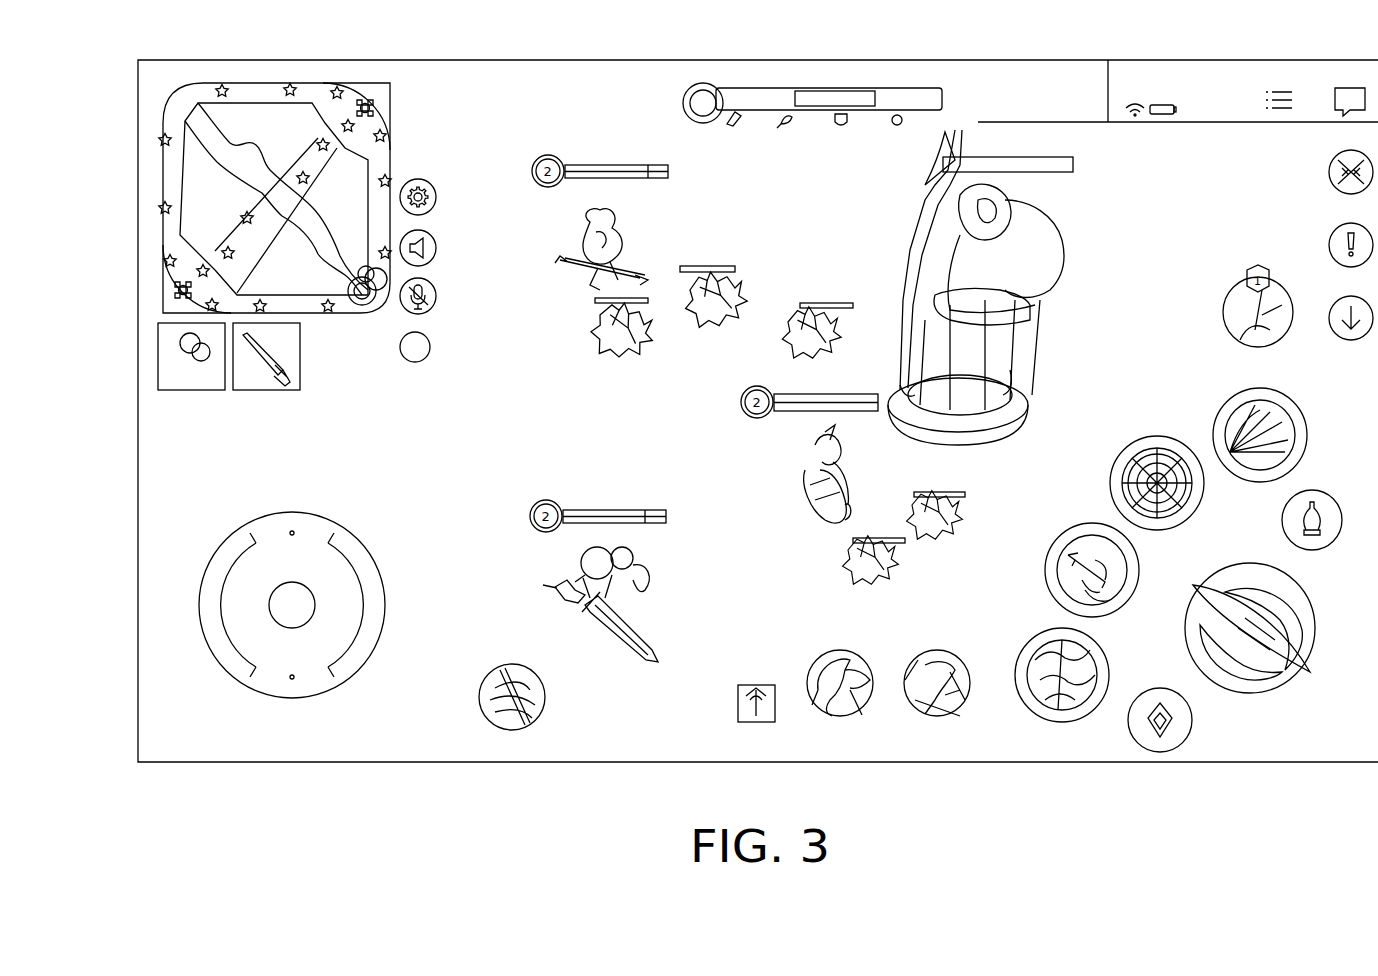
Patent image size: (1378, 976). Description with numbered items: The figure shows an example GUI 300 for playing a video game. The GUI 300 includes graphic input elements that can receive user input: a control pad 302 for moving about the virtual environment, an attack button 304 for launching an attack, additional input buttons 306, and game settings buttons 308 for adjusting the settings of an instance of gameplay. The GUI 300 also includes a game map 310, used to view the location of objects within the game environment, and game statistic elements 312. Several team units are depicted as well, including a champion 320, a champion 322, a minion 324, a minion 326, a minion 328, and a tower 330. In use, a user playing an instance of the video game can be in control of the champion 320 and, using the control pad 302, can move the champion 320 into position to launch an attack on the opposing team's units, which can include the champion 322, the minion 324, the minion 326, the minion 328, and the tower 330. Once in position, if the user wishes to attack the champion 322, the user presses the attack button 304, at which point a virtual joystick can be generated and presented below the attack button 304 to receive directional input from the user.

The GUI 300 is at (68, 80).
The control pad 302 is at (210, 555).
The attack button 304 is at (1290, 680).
The additional input buttons 306 is at (1208, 365).
The game settings buttons 308 is at (444, 187).
The game map 310 is at (392, 163).
The game statistic elements 312 is at (1235, 46).
The champion 320 is at (560, 585).
The champion 322 is at (800, 490).
The minion 324 is at (855, 580).
The minion 326 is at (950, 545).
The minion 328 is at (795, 335).
The tower 330 is at (935, 205).